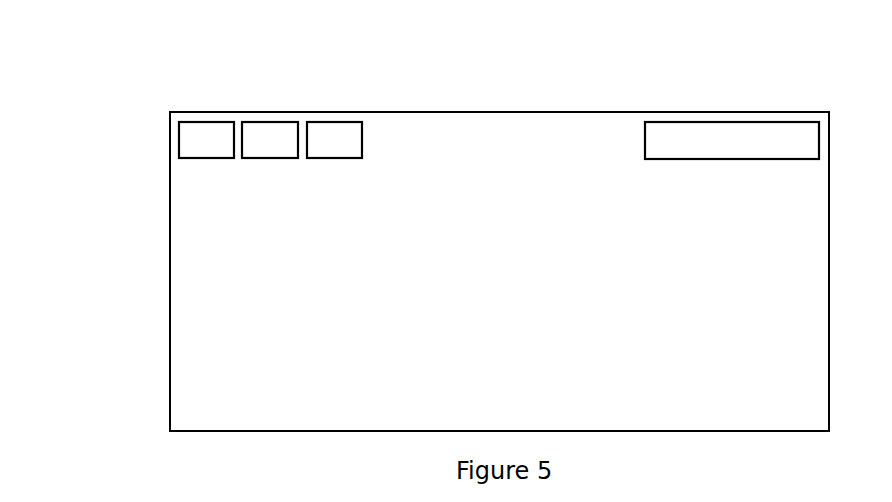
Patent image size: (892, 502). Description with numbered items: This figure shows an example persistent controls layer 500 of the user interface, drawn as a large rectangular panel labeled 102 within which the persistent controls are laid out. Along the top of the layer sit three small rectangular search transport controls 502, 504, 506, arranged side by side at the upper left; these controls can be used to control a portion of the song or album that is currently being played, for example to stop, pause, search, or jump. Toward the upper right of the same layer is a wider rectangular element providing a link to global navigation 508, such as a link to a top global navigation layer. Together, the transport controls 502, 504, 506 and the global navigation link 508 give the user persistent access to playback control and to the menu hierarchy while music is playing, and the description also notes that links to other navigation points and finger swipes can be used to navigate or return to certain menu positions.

The persistent controls layer 500 is at (160, 31).
The device 102 is at (226, 390).
The search transport control 502 is at (197, 149).
The search transport control 504 is at (278, 143).
The search transport control 506 is at (345, 147).
The link to global navigation 508 is at (700, 148).